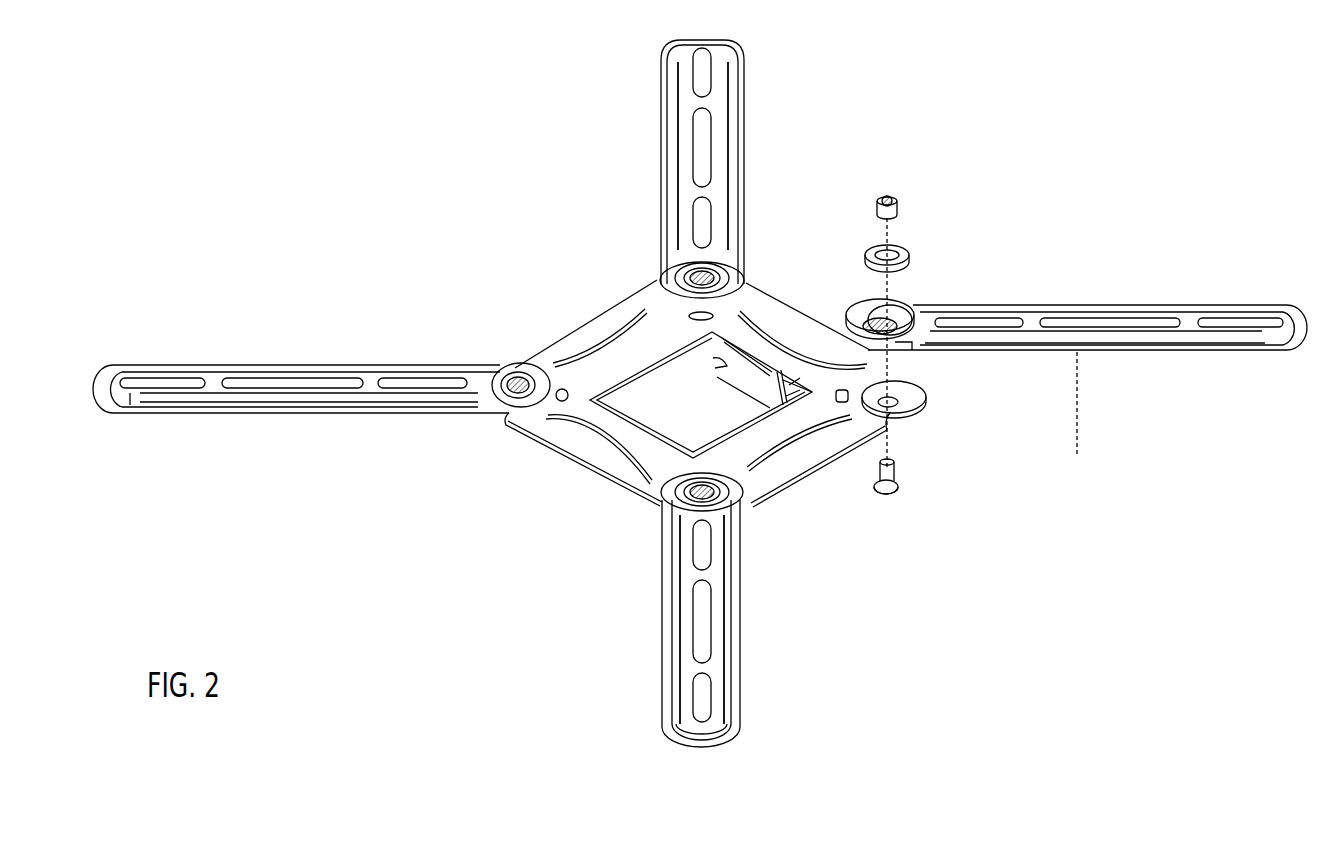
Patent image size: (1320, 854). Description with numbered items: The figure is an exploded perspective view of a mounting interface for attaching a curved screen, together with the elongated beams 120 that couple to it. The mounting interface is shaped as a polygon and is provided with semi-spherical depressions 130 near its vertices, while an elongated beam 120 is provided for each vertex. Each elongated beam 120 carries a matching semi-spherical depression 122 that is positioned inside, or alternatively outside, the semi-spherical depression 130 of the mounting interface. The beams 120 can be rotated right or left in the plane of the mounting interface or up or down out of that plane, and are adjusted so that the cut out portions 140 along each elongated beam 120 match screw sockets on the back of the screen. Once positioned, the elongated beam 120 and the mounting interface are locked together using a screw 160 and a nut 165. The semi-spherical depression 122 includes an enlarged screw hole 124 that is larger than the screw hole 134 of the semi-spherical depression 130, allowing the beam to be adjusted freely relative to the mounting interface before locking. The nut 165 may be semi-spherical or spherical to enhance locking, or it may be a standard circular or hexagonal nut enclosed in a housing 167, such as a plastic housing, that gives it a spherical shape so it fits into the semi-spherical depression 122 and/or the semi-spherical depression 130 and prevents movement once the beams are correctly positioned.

The elongated beam 120 is at (742, 123).
The semi-spherical depression 122 is at (875, 312).
The enlarged screw hole 124 is at (892, 310).
The semi-spherical depression 130 is at (905, 383).
The screw hole 134 is at (910, 408).
The cut out portion 140 is at (1258, 320).
The screw 160 is at (894, 492).
The nut 165 is at (897, 205).
The housing 167 is at (909, 257).